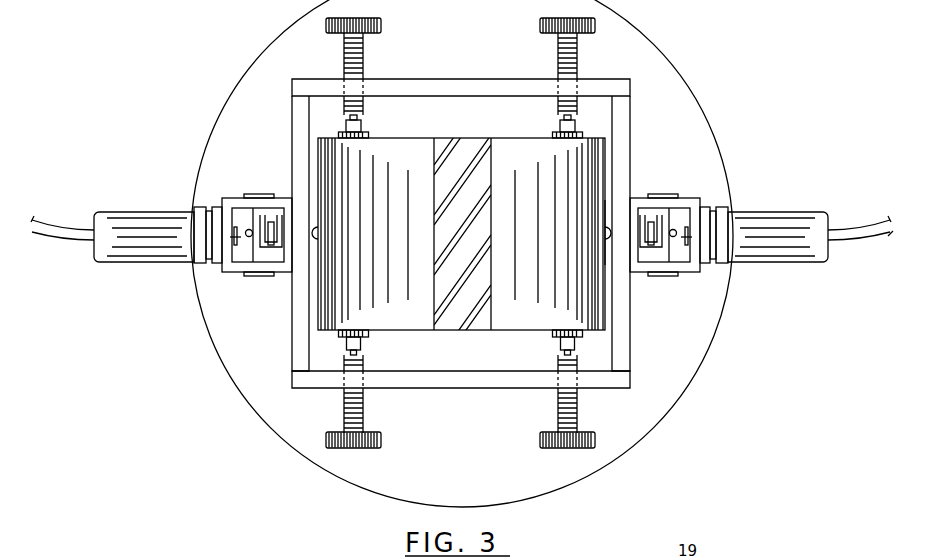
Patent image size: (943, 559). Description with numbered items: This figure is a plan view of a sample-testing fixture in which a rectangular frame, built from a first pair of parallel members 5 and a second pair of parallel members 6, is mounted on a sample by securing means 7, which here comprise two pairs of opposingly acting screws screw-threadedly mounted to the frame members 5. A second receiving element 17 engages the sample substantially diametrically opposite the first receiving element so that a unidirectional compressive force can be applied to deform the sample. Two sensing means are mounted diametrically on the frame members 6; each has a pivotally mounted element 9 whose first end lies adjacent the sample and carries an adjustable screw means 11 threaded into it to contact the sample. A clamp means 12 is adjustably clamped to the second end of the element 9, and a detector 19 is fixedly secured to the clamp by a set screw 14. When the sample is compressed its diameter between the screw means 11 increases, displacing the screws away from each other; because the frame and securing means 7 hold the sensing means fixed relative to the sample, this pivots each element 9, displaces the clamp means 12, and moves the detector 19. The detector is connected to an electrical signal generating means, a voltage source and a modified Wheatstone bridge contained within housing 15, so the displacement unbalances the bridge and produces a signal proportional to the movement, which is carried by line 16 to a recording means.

The first pair of parallel members 5 is at (480, 389).
The second pair of parallel members 6 is at (629, 332).
The securing means 7 is at (539, 443).
The element 9 is at (652, 244).
The adjustable screw means 11 is at (606, 217).
The clamp means 12 is at (655, 216).
The set screw 14 is at (676, 237).
The housing 15 is at (770, 212).
The line 16 is at (863, 227).
The second receiving element 17 is at (452, 152).
The detector 19 is at (687, 224).